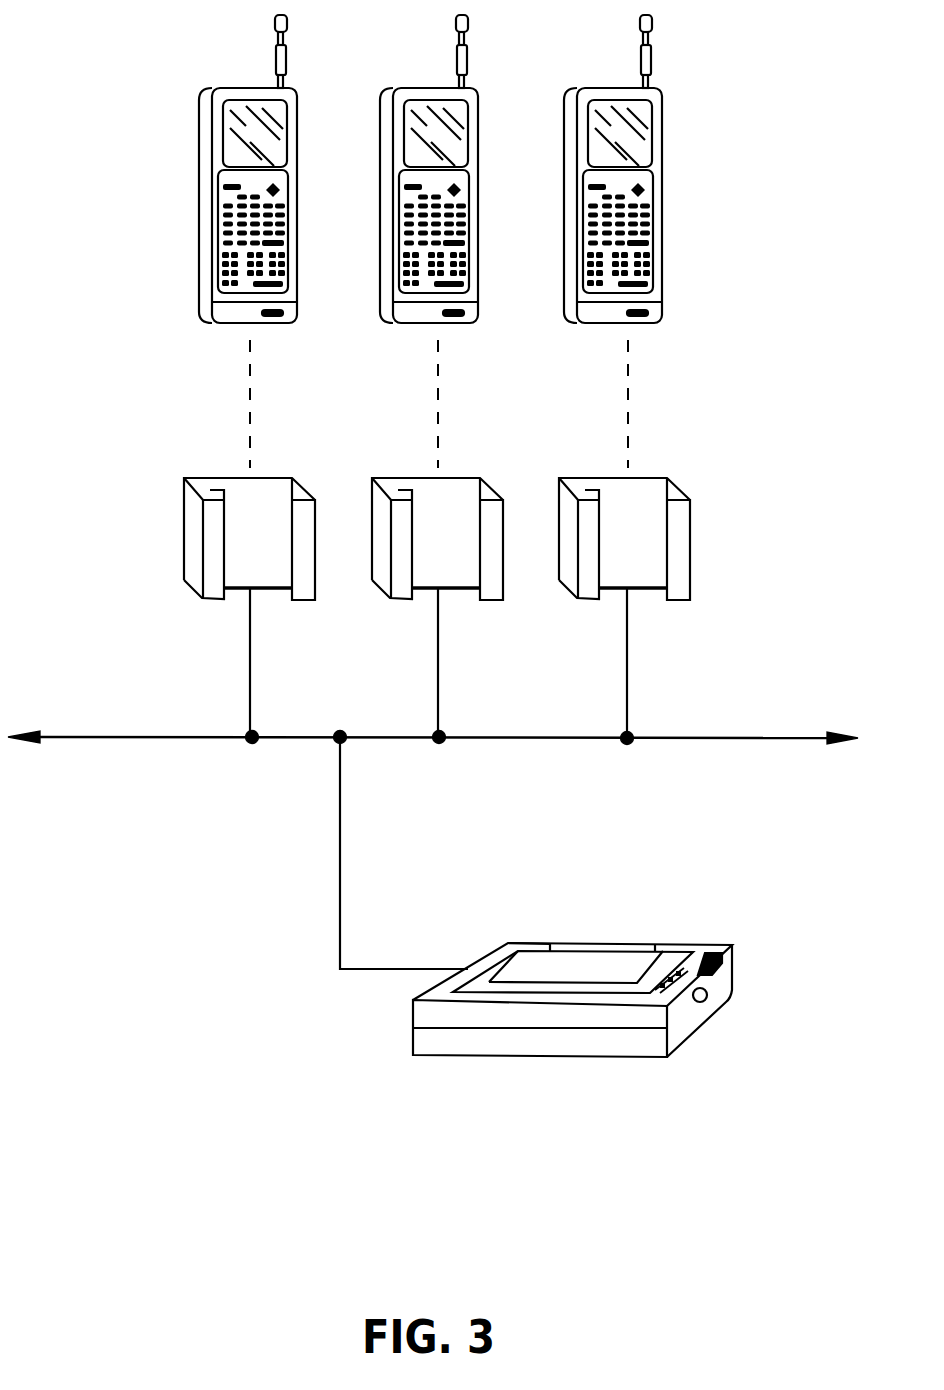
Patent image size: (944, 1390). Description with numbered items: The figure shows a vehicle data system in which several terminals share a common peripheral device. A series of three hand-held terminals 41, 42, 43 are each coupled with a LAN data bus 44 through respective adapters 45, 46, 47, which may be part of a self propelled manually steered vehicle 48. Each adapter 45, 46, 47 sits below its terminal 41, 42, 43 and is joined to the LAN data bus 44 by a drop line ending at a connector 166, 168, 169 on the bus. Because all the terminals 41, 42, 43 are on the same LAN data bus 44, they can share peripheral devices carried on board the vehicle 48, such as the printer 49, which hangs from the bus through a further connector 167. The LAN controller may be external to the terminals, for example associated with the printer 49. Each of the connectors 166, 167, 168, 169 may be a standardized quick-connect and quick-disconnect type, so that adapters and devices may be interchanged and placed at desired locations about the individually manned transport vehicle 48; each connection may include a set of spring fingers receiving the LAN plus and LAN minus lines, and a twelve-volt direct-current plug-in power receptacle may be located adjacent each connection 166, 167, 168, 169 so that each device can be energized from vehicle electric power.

The terminal 41 is at (243, 85).
The terminal 42 is at (433, 85).
The terminal 43 is at (630, 85).
The LAN data bus 44 is at (741, 738).
The adapter 45 is at (238, 492).
The adapter 46 is at (425, 493).
The adapter 47 is at (625, 493).
The self propelled manually steered vehicle 48 is at (751, 580).
The printer 49 is at (712, 982).
The connector 166 is at (250, 736).
The connector 167 is at (338, 740).
The connector 168 is at (437, 736).
The connector 169 is at (625, 737).